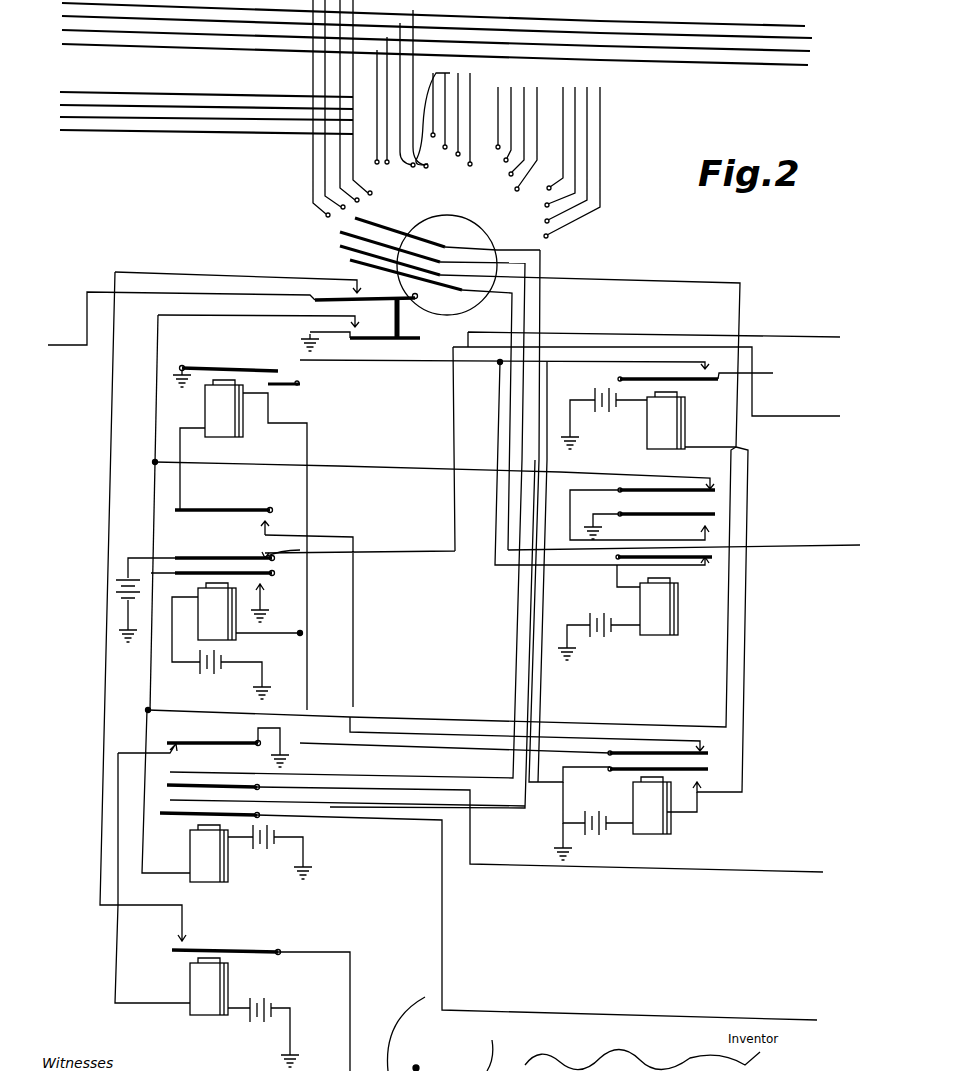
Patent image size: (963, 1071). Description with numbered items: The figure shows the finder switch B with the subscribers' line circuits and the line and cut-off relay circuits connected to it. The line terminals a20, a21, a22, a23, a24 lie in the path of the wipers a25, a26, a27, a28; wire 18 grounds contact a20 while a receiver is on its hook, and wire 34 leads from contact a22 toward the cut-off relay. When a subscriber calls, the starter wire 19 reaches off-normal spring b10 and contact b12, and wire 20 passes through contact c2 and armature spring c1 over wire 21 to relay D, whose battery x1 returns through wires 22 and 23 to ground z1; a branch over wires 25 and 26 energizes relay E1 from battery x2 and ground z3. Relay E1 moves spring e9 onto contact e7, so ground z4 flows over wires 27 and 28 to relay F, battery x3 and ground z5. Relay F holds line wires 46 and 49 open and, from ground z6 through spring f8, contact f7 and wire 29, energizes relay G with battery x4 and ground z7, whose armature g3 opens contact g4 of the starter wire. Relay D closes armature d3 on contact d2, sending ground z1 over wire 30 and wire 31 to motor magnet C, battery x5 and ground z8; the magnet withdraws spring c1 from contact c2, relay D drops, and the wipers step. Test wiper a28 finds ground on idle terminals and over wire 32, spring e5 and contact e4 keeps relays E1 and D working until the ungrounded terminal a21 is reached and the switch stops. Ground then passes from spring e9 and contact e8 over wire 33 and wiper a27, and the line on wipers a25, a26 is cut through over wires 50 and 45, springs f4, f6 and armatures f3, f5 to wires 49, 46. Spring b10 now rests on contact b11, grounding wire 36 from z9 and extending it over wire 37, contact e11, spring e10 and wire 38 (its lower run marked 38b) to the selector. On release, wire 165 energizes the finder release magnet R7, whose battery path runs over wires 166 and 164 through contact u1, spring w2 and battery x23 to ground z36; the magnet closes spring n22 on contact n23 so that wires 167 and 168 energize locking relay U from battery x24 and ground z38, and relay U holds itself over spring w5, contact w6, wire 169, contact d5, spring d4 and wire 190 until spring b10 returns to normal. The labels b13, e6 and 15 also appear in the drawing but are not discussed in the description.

The wire 18 is at (186, 40).
The wire 34 is at (280, 36).
The contact a20 is at (328, 216).
The contact a21 is at (375, 165).
The contact a22 is at (440, 170).
The contact a23 is at (490, 170).
The contact a24 is at (476, 123).
The wiper a25 is at (447, 233).
The wiper a26 is at (345, 234).
The wiper a27 is at (337, 250).
The wiper a28 is at (360, 264).
The finder switch B is at (447, 257).
The wire 45 is at (575, 252).
The wire 50 is at (515, 302).
The wire 33 is at (742, 305).
The wire 165 is at (808, 330).
The wire 164 is at (812, 404).
The contact arm b13 is at (233, 308).
The off-normal switch spring b10 is at (420, 300).
The contact b12 is at (400, 320).
The contact b11 is at (375, 345).
The ground z9 is at (318, 350).
The wire 20 is at (412, 358).
The starter wire 19 is at (124, 606).
The wire 36 is at (235, 318).
The spring n22 is at (229, 359).
The wire 38 is at (180, 388).
The finder release magnet R7 is at (243, 445).
The contact n23 is at (296, 377).
The wire 37 is at (434, 468).
The wire 25 is at (498, 437).
The wire 32 is at (508, 460).
The wire 21 is at (548, 452).
The spring w5 is at (224, 500).
The wire 166 is at (178, 497).
The wire 167 is at (304, 504).
The contact w6 is at (305, 524).
The spring w2 is at (200, 555).
The contact u1 is at (305, 566).
The battery x23 is at (116, 592).
The ground z36 is at (125, 635).
The locking relay U is at (236, 632).
The wire 168 is at (284, 590).
The battery x24 is at (213, 674).
The ground z38 is at (272, 688).
The wire 169 is at (355, 676).
The wire 27 is at (724, 684).
The wire 31 is at (745, 692).
The wire 28 is at (147, 732).
The contact c2 is at (710, 373).
The armature spring c1 is at (702, 385).
The motor magnet C is at (653, 420).
The battery x5 is at (603, 410).
The ground z8 is at (581, 444).
The spring e10 is at (720, 487).
The contact e11 is at (712, 485).
The contact e8 is at (720, 511).
The armature spring e9 is at (720, 517).
The contact e7 is at (712, 532).
The ground z4 is at (604, 530).
The contact e4 is at (705, 562).
The contact e6 is at (715, 552).
The spring e5 is at (715, 562).
The wire 38b is at (825, 547).
The wire 26 is at (615, 580).
The relay E1 is at (622, 610).
The battery x2 is at (600, 614).
The ground z3 is at (572, 666).
The spring f8 is at (223, 737).
The ground z6 is at (293, 759).
The contact f7 is at (178, 752).
The spring f6 is at (163, 781).
The armature f5 is at (157, 787).
The wire 190 is at (406, 745).
The spring f4 is at (163, 803).
The armature f3 is at (167, 817).
The relay F is at (222, 796).
The battery x3 is at (261, 848).
The ground z5 is at (314, 874).
The contact d5 is at (702, 748).
The spring d4 is at (712, 753).
The armature d3 is at (712, 770).
The contact d2 is at (697, 790).
The relay D is at (630, 805).
The battery x1 is at (599, 814).
The wire 30 is at (563, 792).
The ground z1 is at (550, 842).
The wire 23 is at (584, 830).
The wire 22 is at (626, 832).
The line wire 46 is at (740, 876).
The line wire 49 is at (679, 1012).
The conductor 15 is at (782, 728).
The wire 29 is at (115, 940).
The contact g4 is at (191, 946).
The armature spring g3 is at (190, 955).
The relay G is at (240, 1004).
The battery x4 is at (278, 1003).
The ground z7 is at (300, 1060).